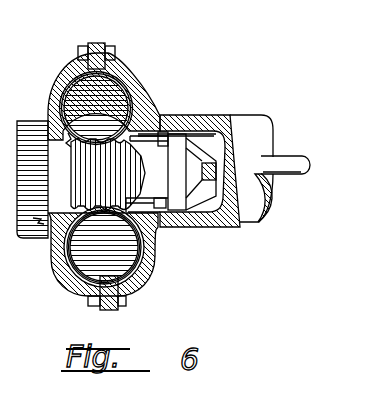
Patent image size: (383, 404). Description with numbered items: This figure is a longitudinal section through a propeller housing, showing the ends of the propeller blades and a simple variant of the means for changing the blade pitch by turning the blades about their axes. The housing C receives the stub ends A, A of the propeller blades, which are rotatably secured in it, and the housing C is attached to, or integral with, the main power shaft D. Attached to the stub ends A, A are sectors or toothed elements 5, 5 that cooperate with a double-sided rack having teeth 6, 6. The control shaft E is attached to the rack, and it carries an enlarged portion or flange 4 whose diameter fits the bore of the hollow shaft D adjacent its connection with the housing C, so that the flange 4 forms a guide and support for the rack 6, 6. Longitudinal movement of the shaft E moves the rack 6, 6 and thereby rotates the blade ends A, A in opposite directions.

The stub end of propeller blade A is at (128, 77).
The housing C is at (114, 65).
The main power shaft D is at (231, 113).
The control shaft E is at (266, 151).
The flange 4 is at (185, 219).
The toothed element 5 is at (53, 187).
The rack teeth 6 is at (64, 136).